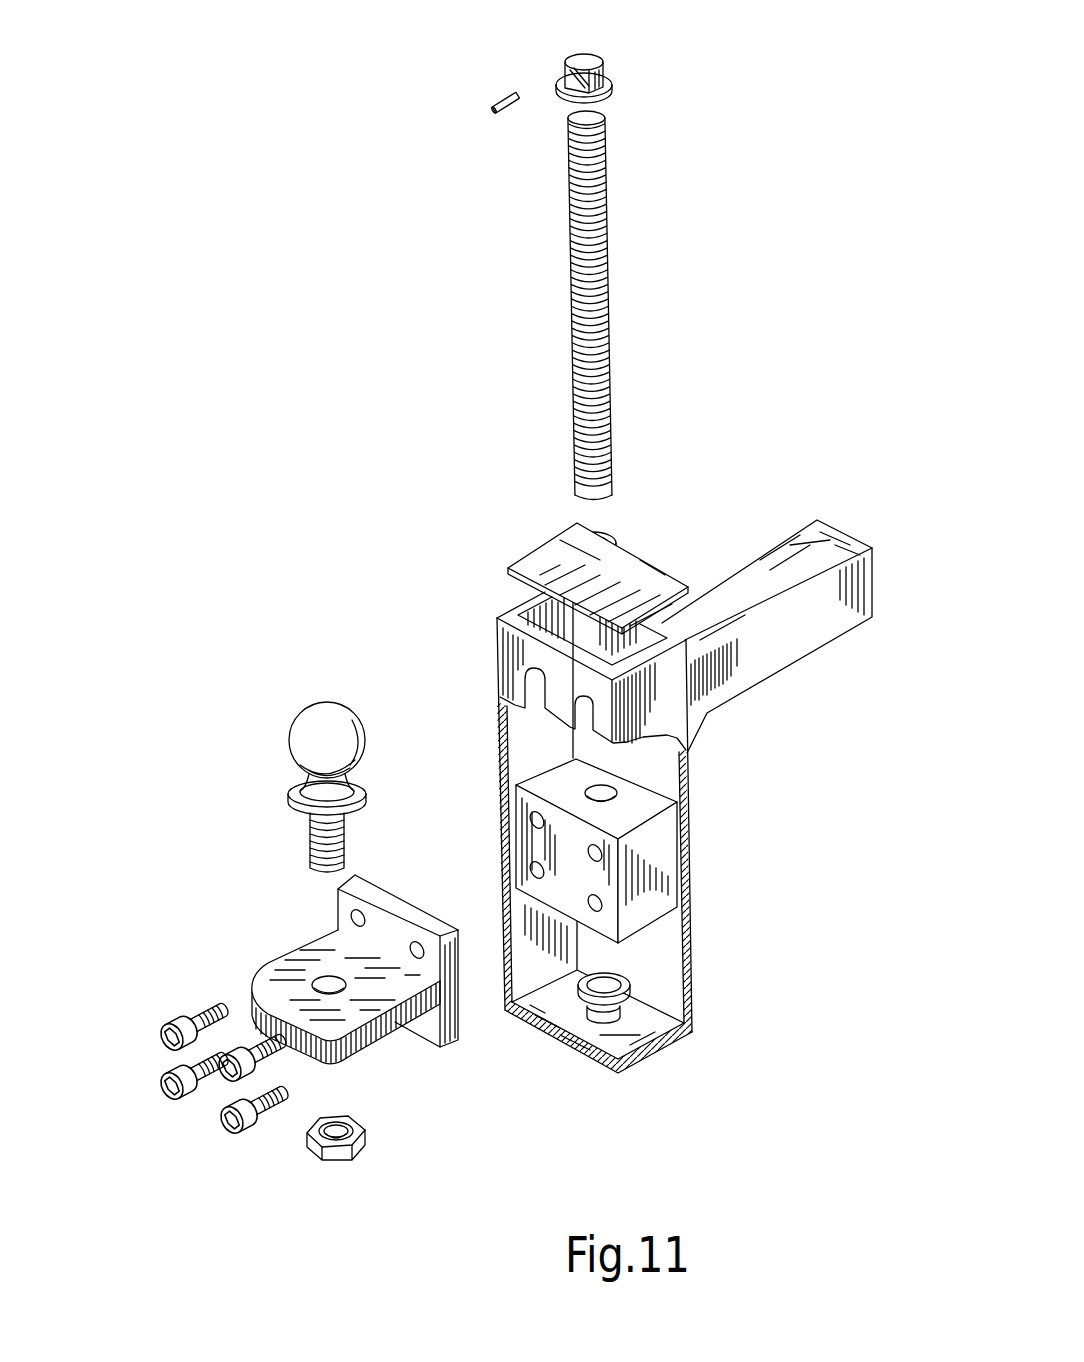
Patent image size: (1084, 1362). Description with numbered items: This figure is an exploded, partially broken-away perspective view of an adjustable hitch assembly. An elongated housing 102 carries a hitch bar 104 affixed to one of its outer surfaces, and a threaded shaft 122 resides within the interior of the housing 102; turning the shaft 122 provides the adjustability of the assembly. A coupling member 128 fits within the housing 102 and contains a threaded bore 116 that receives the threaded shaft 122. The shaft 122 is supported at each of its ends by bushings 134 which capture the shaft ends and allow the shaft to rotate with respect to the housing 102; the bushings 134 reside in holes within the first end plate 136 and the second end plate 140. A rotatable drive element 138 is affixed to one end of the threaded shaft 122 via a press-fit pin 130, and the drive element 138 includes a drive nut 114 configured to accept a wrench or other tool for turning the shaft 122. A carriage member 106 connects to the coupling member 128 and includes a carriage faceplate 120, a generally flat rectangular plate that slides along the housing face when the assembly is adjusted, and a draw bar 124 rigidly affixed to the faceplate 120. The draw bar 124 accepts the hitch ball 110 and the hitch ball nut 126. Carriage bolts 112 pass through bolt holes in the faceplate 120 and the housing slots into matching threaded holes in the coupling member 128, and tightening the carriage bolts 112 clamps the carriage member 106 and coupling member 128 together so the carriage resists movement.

The elongated housing 102 is at (772, 730).
The hitch bar 104 is at (807, 640).
The carriage member 106 is at (348, 961).
The hitch ball 110 is at (318, 717).
The carriage bolts 112 is at (263, 1042).
The drive nut 114 is at (637, 69).
The threaded bore 116 is at (617, 793).
The carriage faceplate 120 is at (450, 1046).
The threaded shaft 122 is at (610, 309).
The draw bar 124 is at (284, 967).
The hitch ball nut 126 is at (342, 1158).
The coupling member 128 is at (656, 851).
The press-fit pin 130 is at (493, 112).
The bushings 134 is at (620, 557).
The first end plate 136 is at (653, 587).
The rotatable drive element 138 is at (608, 91).
The second end plate 140 is at (630, 1042).